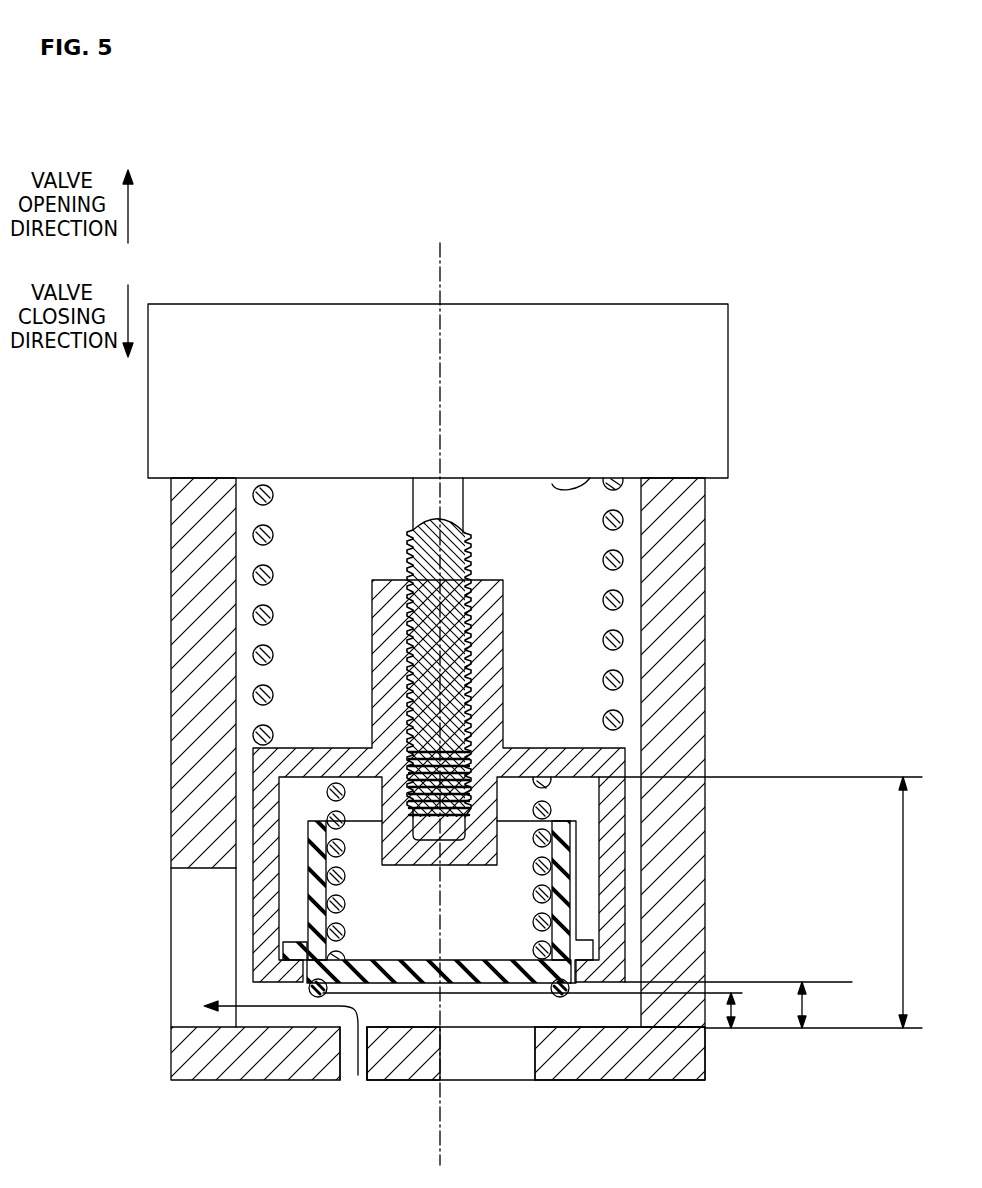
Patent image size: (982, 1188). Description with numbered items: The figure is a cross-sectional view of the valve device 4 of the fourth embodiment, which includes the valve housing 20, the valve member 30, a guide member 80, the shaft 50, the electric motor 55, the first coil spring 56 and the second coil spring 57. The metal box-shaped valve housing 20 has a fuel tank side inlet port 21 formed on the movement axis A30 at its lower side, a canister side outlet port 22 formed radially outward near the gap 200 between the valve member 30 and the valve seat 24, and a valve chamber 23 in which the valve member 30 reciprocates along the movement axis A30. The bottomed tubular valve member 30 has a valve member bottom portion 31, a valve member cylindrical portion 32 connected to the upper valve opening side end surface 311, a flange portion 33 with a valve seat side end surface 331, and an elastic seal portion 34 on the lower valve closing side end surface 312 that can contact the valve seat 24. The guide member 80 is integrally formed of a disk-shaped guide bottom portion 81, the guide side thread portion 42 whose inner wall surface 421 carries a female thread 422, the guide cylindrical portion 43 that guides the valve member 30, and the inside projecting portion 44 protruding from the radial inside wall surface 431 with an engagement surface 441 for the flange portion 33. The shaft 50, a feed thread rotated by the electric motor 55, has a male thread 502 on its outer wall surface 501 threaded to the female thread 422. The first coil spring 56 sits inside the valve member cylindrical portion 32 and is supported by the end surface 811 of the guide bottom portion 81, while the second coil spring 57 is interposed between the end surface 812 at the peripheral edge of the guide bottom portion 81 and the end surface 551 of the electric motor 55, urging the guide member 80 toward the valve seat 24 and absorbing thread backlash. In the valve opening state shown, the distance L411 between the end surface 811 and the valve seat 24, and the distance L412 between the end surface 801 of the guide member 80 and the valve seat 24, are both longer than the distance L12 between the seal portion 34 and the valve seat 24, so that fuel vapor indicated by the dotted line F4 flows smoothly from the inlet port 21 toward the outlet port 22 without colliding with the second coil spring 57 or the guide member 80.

The valve device 4 is at (722, 290).
The valve housing 20 is at (392, 752).
The fuel tank side inlet port 21 is at (404, 1062).
The canister side outlet port 22 is at (180, 912).
The valve chamber 23 is at (290, 682).
The valve seat 24 is at (572, 1030).
The valve member 30 is at (321, 971).
The valve member bottom portion 31 is at (458, 984).
The valve member cylindrical portion 32 is at (316, 856).
The flange portion 33 is at (290, 948).
The seal portion 34 is at (318, 998).
The guide side thread portion 42 is at (355, 781).
The guide cylindrical portion 43 is at (315, 786).
The inside projecting portion 44 is at (694, 902).
The shaft 50 is at (422, 494).
The electric motor 55 is at (705, 388).
The first coil spring 56 is at (593, 894).
The second coil spring 57 is at (623, 518).
The guide member 80 is at (251, 781).
The guide bottom portion 81 is at (537, 757).
The gap 200 is at (338, 1032).
The valve opening side end surface 311 is at (492, 960).
The valve closing side end surface 312 is at (512, 994).
The valve seat side end surface 331 is at (312, 986).
The inner wall surface 421 is at (452, 567).
The female thread 422 is at (455, 610).
The radial inside wall surface 431 is at (325, 748).
The engagement surface 441 is at (590, 944).
The outer wall surface 501 is at (385, 675).
The male thread 502 is at (407, 567).
The end surface of the electric motor 551 is at (552, 484).
The end surface of the guide member 801 is at (602, 1003).
The end surface of the guide bottom portion 811 is at (600, 790).
The end surface of the guide bottom portion 812 is at (567, 748).
The movement axis A30 is at (442, 278).
The fuel vapor flow F4 is at (281, 1061).
The distance L411 is at (900, 858).
The distance L412 is at (812, 1006).
The distance L12 is at (742, 1006).